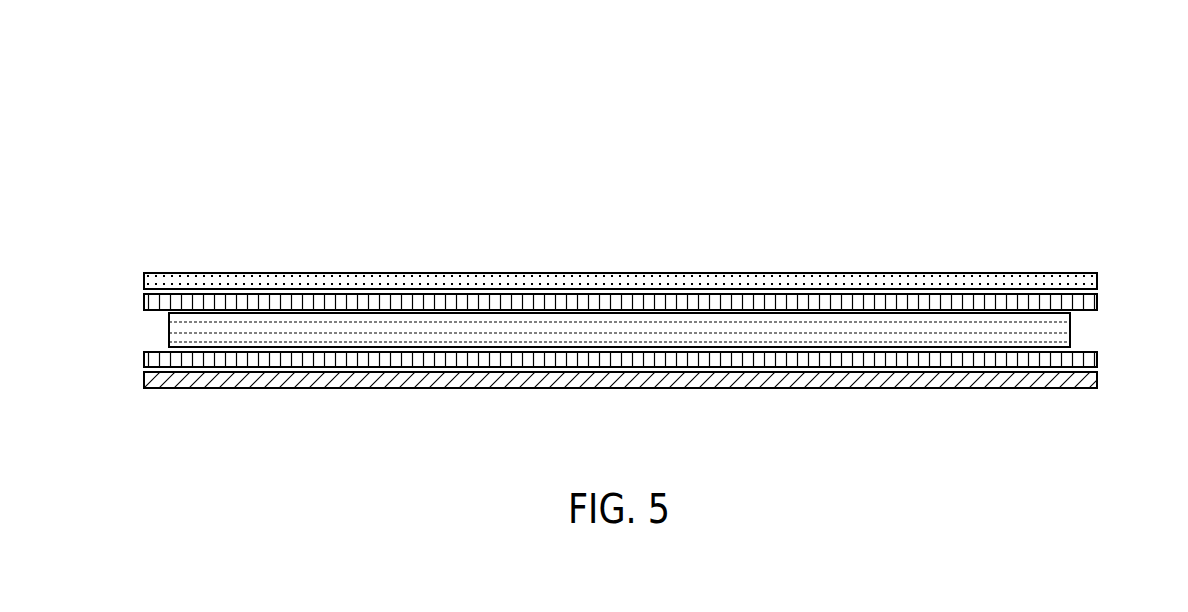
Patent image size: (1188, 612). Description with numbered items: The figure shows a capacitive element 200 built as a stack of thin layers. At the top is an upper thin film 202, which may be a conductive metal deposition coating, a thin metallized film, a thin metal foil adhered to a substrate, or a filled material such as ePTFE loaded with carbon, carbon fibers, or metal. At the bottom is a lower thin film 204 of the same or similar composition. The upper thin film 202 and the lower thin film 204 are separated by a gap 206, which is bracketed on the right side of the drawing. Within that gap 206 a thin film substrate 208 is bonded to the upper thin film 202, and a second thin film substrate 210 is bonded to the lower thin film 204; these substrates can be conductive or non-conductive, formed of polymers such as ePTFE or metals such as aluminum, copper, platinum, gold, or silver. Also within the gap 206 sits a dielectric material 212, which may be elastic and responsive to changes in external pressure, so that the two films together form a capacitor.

The capacitive element 200 is at (118, 122).
The upper thin film 202 is at (678, 272).
The lower thin film 204 is at (712, 389).
The gap 206 is at (1107, 292).
The thin film substrate 208 is at (144, 303).
The second thin film substrate 210 is at (144, 359).
The dielectric material 212 is at (169, 336).